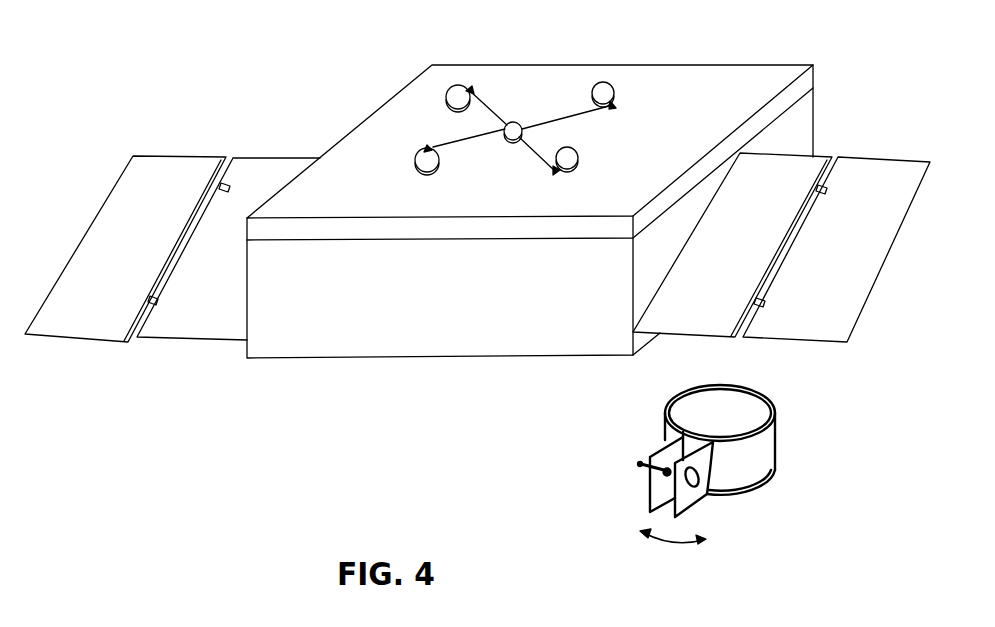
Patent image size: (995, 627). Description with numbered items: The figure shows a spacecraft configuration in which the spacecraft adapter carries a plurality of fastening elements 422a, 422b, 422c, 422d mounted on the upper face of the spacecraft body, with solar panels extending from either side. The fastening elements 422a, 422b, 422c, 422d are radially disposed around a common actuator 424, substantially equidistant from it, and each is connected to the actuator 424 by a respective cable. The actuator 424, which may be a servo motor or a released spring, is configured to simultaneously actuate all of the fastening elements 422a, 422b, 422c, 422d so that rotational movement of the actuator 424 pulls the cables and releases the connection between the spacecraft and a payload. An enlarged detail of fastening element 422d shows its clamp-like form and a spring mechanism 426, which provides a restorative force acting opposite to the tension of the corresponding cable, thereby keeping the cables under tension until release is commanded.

The fastening element 422a is at (412, 160).
The fastening element 422b is at (446, 92).
The fastening element 422c is at (609, 85).
The fastening element 422d is at (583, 150).
The actuator 424 is at (517, 122).
The spring mechanism 426 is at (640, 467).